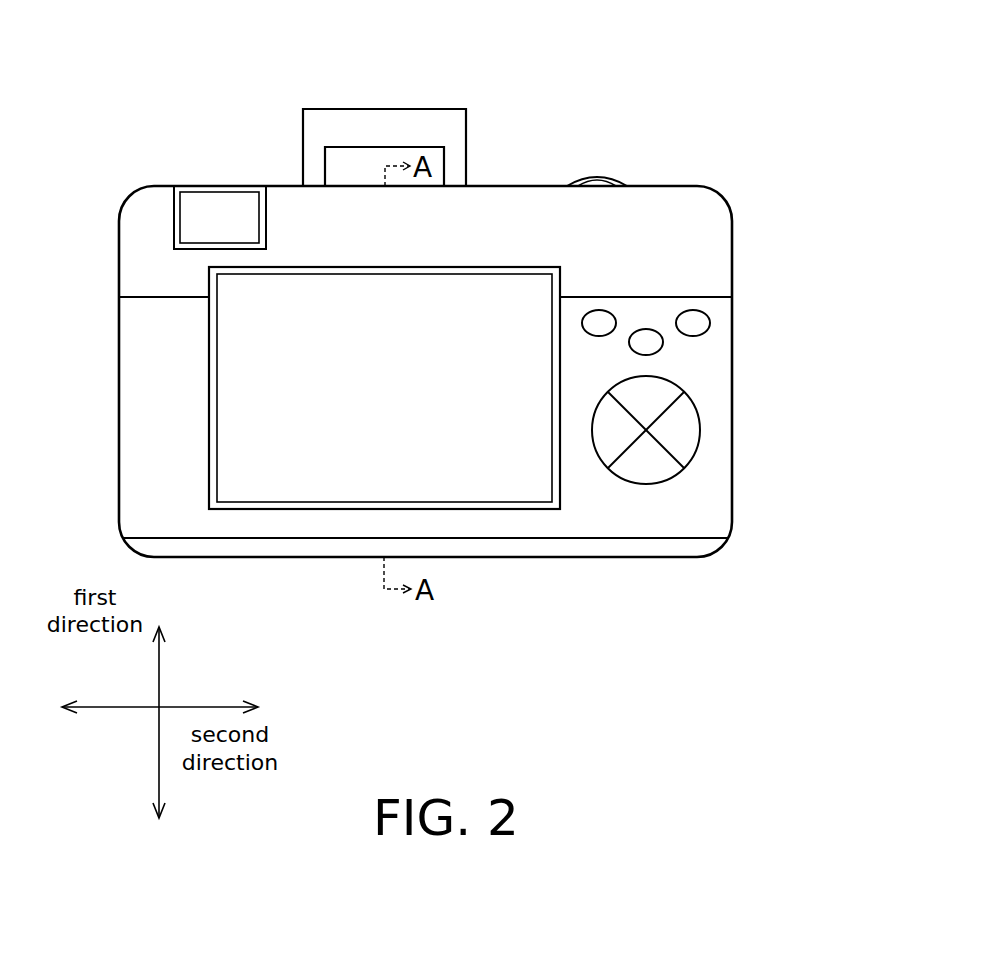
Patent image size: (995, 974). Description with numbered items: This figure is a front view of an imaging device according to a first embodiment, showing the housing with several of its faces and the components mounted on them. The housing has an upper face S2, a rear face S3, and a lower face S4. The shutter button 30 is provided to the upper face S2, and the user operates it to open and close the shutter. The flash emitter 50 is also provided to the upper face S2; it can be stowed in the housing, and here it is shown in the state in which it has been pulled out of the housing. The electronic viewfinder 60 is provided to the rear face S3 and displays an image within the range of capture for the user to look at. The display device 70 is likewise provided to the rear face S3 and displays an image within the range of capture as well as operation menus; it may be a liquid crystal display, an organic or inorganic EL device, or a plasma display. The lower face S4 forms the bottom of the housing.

The flash emitter 50 is at (387, 108).
The shutter button 30 is at (597, 180).
The electronic viewfinder 60 is at (177, 220).
The display device 70 is at (213, 390).
The upper face S2 is at (660, 186).
The rear face S3 is at (177, 472).
The lower face S4 is at (545, 558).